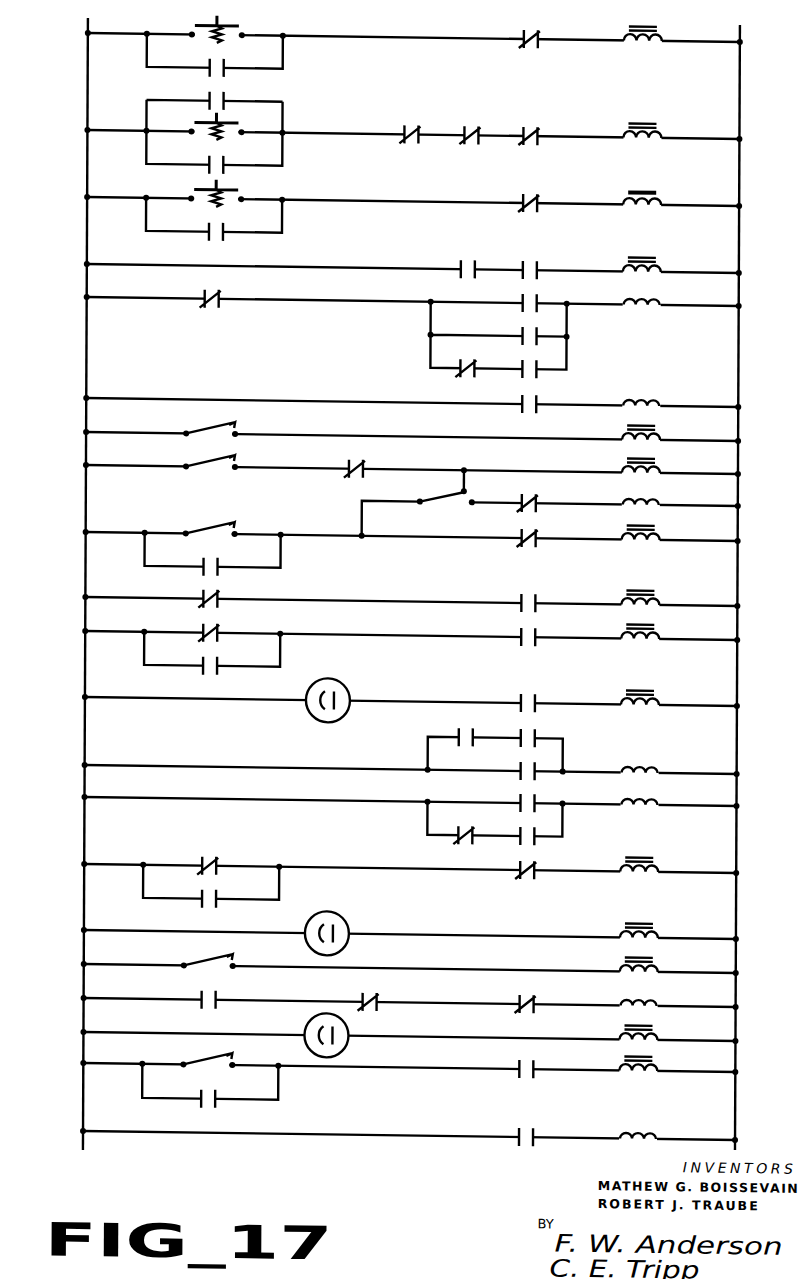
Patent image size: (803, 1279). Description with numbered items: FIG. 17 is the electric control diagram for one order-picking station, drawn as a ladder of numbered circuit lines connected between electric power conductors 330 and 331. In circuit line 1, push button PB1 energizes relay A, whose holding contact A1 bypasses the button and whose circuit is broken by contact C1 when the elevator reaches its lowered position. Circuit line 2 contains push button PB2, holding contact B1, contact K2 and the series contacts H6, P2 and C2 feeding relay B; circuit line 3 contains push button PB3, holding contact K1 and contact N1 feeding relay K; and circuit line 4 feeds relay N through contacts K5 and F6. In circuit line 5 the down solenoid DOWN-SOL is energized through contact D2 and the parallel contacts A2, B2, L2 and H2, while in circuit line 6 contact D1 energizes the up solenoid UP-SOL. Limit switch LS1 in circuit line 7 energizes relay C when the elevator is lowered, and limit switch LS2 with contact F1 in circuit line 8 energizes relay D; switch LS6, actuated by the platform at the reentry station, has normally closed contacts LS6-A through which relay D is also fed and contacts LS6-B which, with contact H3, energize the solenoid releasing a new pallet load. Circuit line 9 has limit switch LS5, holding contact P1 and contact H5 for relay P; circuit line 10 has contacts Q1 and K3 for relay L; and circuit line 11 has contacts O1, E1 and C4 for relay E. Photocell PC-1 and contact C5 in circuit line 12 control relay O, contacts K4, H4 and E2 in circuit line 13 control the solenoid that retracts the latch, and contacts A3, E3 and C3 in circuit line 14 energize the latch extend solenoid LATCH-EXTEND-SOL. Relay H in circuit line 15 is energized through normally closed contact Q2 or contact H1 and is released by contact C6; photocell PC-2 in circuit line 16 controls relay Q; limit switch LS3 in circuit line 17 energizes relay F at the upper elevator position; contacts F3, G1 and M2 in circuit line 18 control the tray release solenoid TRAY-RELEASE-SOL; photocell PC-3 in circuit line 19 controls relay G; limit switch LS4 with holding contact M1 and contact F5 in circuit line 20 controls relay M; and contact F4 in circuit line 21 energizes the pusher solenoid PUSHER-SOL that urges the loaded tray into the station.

The electric power conductor 330 is at (88, 78).
The electric power conductor 331 is at (740, 85).
The push button PB1 is at (199, 23).
The push button PB2 is at (201, 117).
The push button switch PB3 is at (201, 186).
The relay contact A1 is at (224, 65).
The relay contact B1 is at (224, 96).
The relay contact K2 is at (224, 162).
The relay contact K1 is at (224, 229).
The relay contact C1 is at (535, 29).
The relay contact H6 is at (416, 126).
The relay contact P2 is at (476, 126).
The relay contact C2 is at (535, 126).
The relay contact N1 is at (535, 193).
The relay contact K5 is at (473, 260).
The relay contact F6 is at (535, 260).
The relay contact D2 is at (217, 293).
The relay contact A2 is at (535, 295).
The relay contact B2 is at (498, 334).
The relay contact L2 is at (473, 359).
The relay contact H2 is at (544, 363).
The relay contact D1 is at (523, 396).
The limit switch LS1 is at (205, 427).
The limit switch LS2 is at (205, 460).
The relay contact F1 is at (361, 458).
The limit switch LS6 is at (440, 492).
The normally closed switch contacts LS6-A is at (470, 482).
The switch contacts LS6-B is at (577, 515).
The relay contact H3 is at (540, 505).
The limit switch LS5 is at (205, 527).
The relay contact P1 is at (220, 564).
The relay contact H5 is at (540, 540).
The relay contact Q1 is at (217, 593).
The relay contact K3 is at (535, 593).
The relay contact O1 is at (217, 627).
The relay contact E1 is at (220, 663).
The relay contact C4 is at (535, 627).
The photocell PC-1 is at (346, 714).
The relay contact C5 is at (535, 693).
The relay contact K4 is at (473, 728).
The relay contact H4 is at (535, 728).
The relay contact E2 is at (522, 766).
The relay contact A3 is at (522, 798).
The relay contact E3 is at (473, 825).
The relay contact C3 is at (522, 840).
The normally closed relay contact Q2 is at (217, 860).
The relay contact H1 is at (220, 896).
The relay contact C6 is at (521, 874).
The photocell PC-2 is at (346, 947).
The limit switch LS3 is at (205, 958).
The relay contact F3 is at (204, 992).
The relay contact G1 is at (365, 993).
The relay contact M2 is at (522, 993).
The photocell PC-3 is at (346, 1049).
The limit switch LS4 is at (205, 1058).
The relay contact M1 is at (220, 1096).
The relay contact F5 is at (535, 1059).
The relay contact F4 is at (522, 1129).
The relay A is at (653, 29).
The relay B is at (652, 126).
The relay K is at (653, 193).
The relay N is at (653, 260).
The relay C is at (651, 428).
The relay D is at (652, 461).
The relay P is at (651, 528).
The relay L is at (649, 593).
The relay E is at (649, 627).
The relay O is at (651, 693).
The relay H is at (650, 860).
The relay Q is at (650, 926).
The relay F is at (648, 960).
The relay G is at (649, 1028).
The relay M is at (650, 1059).
The down solenoid DOWN-SOL is at (656, 296).
The up solenoid UP-SOL is at (649, 397).
The latch extend solenoid LATCH-EXTEND-SOL is at (655, 795).
The tray release solenoid TRAY-RELEASE-SOL is at (655, 996).
The pusher solenoid PUSHER-SOL is at (642, 1129).
The circuit line 1 is at (400, 37).
The circuit line 2 is at (400, 134).
The circuit line 3 is at (399, 201).
The circuit line 4 is at (399, 268).
The circuit line 5 is at (399, 301).
The circuit line 6 is at (398, 402).
The circuit line 7 is at (398, 436).
The circuit line 8 is at (398, 469).
The circuit line 9 is at (398, 536).
The circuit line 10 is at (392, 601).
The circuit line 11 is at (392, 635).
The circuit line 12 is at (391, 701).
The circuit line 13 is at (391, 769).
The circuit line 14 is at (391, 801).
The circuit line 15 is at (390, 868).
The circuit line 16 is at (390, 934).
The circuit line 17 is at (390, 968).
The circuit line 18 is at (390, 1002).
The circuit line 19 is at (390, 1036).
The circuit line 20 is at (390, 1067).
The circuit line 21 is at (389, 1135).